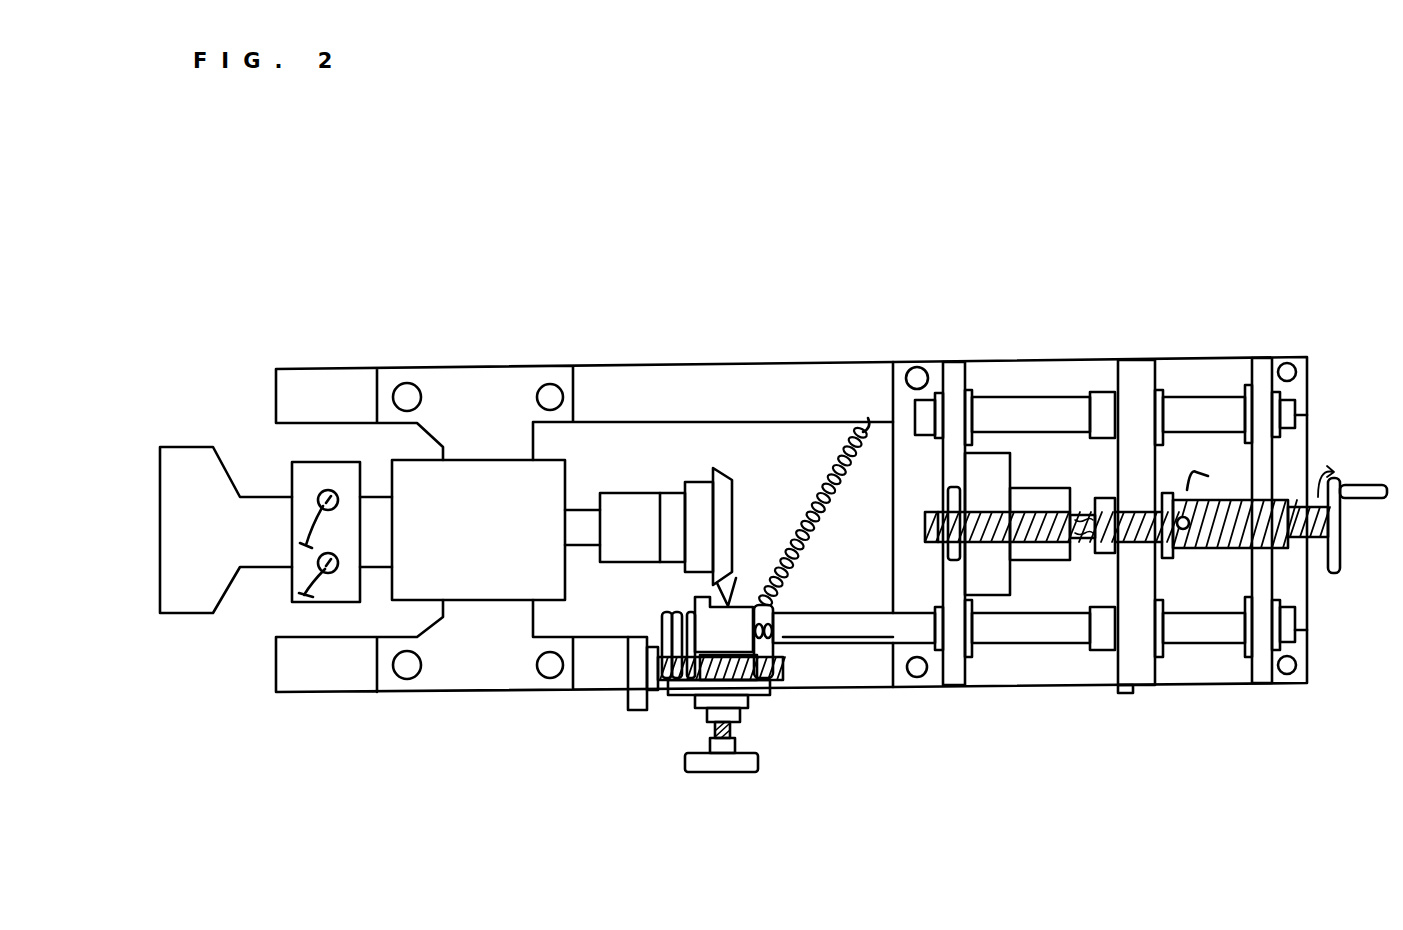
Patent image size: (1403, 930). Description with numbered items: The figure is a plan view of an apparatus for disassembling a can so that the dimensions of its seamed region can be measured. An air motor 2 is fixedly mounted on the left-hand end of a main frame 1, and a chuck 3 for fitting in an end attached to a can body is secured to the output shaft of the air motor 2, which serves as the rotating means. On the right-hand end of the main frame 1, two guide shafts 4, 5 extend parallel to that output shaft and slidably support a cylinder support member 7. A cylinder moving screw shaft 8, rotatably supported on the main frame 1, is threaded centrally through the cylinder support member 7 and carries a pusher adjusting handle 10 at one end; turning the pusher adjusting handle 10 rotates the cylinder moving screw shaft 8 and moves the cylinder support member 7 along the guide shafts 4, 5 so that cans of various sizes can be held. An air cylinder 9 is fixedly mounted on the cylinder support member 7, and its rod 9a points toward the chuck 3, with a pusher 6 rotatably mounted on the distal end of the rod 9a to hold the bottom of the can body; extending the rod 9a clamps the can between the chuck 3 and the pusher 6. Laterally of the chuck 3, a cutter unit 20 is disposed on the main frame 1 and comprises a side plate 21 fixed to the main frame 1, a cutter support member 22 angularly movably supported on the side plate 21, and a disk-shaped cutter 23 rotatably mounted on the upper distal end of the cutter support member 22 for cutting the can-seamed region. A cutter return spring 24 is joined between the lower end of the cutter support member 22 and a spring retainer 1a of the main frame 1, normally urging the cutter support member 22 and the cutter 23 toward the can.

The main frame 1 is at (303, 378).
The spring retainer 1a is at (867, 424).
The air motor 2 is at (475, 475).
The chuck 3 is at (694, 470).
The guide shaft 4 is at (866, 630).
The guide shaft 5 is at (1022, 412).
The pusher 6 is at (985, 473).
The cylinder support member 7 is at (1143, 685).
The cylinder moving screw shaft 8 is at (1080, 512).
The air cylinder 9 is at (1138, 510).
The rod 9a is at (1077, 545).
The pusher adjusting handle 10 is at (1335, 572).
The cutter unit 20 is at (689, 721).
The side plate 21 is at (770, 690).
The cutter support member 22 is at (750, 612).
The cutter 23 is at (737, 627).
The cutter return spring 24 is at (803, 563).